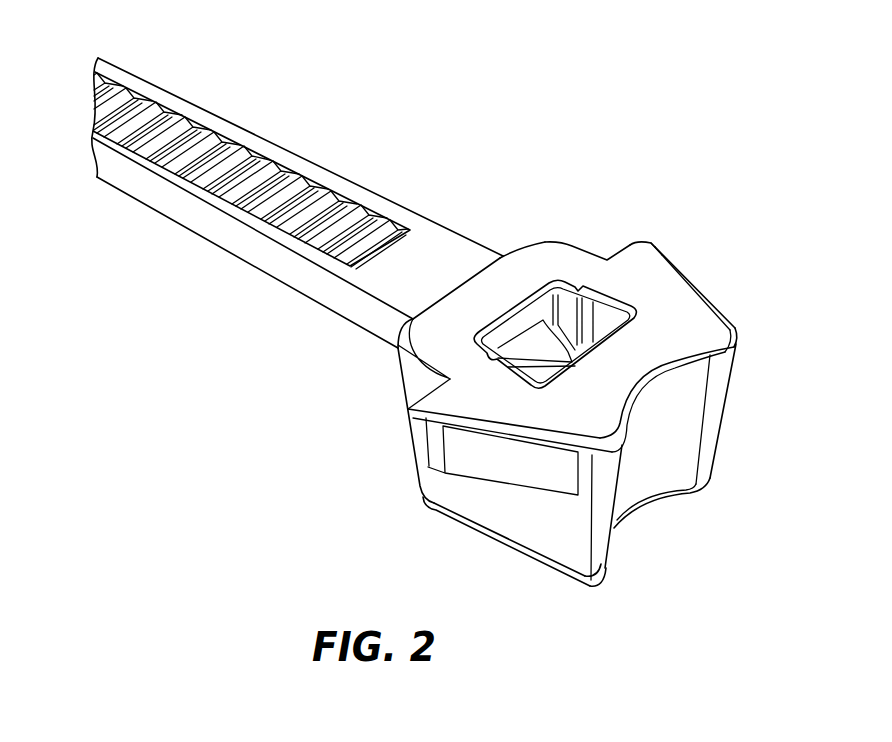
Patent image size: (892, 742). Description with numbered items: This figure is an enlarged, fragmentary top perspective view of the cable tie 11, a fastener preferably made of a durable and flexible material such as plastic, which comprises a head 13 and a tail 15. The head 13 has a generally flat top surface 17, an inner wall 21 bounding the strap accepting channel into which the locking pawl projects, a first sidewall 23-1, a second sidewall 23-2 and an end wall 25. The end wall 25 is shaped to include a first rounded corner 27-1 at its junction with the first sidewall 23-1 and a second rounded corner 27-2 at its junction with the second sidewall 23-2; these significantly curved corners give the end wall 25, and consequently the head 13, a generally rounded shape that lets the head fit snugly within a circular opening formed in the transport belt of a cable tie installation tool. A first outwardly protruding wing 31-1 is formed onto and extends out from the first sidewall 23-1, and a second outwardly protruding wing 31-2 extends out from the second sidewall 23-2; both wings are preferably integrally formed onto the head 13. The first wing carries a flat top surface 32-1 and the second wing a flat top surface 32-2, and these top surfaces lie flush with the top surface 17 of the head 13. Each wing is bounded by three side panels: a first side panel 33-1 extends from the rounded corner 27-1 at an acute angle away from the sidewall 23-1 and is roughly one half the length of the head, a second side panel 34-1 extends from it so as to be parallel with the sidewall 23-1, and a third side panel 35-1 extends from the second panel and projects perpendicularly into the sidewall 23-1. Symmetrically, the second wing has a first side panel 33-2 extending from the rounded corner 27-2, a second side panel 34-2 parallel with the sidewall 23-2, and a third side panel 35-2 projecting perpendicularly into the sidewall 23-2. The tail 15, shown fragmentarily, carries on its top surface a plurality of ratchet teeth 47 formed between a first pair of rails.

The cable tie 11 is at (290, 522).
The head 13 is at (607, 220).
The tail 15 is at (190, 93).
The top surface 17 is at (527, 260).
The inner wall 21 is at (480, 276).
The first sidewall 23-1 is at (495, 505).
The second sidewall 23-2 is at (580, 246).
The end wall 25 is at (638, 470).
The first rounded corner 27-1 is at (603, 548).
The second rounded corner 27-2 is at (722, 373).
The first outwardly protruding wing 31-1 is at (478, 459).
The second outwardly protruding wing 31-2 is at (709, 292).
The flat top surface 32-1 is at (458, 408).
The flat top surface 32-2 is at (660, 280).
The first side panel 33-1 is at (553, 473).
The first side panel 33-2 is at (730, 332).
The second side panel 34-1 is at (417, 447).
The second side panel 34-2 is at (654, 249).
The third side panel 35-1 is at (415, 383).
The third side panel 35-2 is at (630, 245).
The ratchet teeth 47 is at (297, 190).